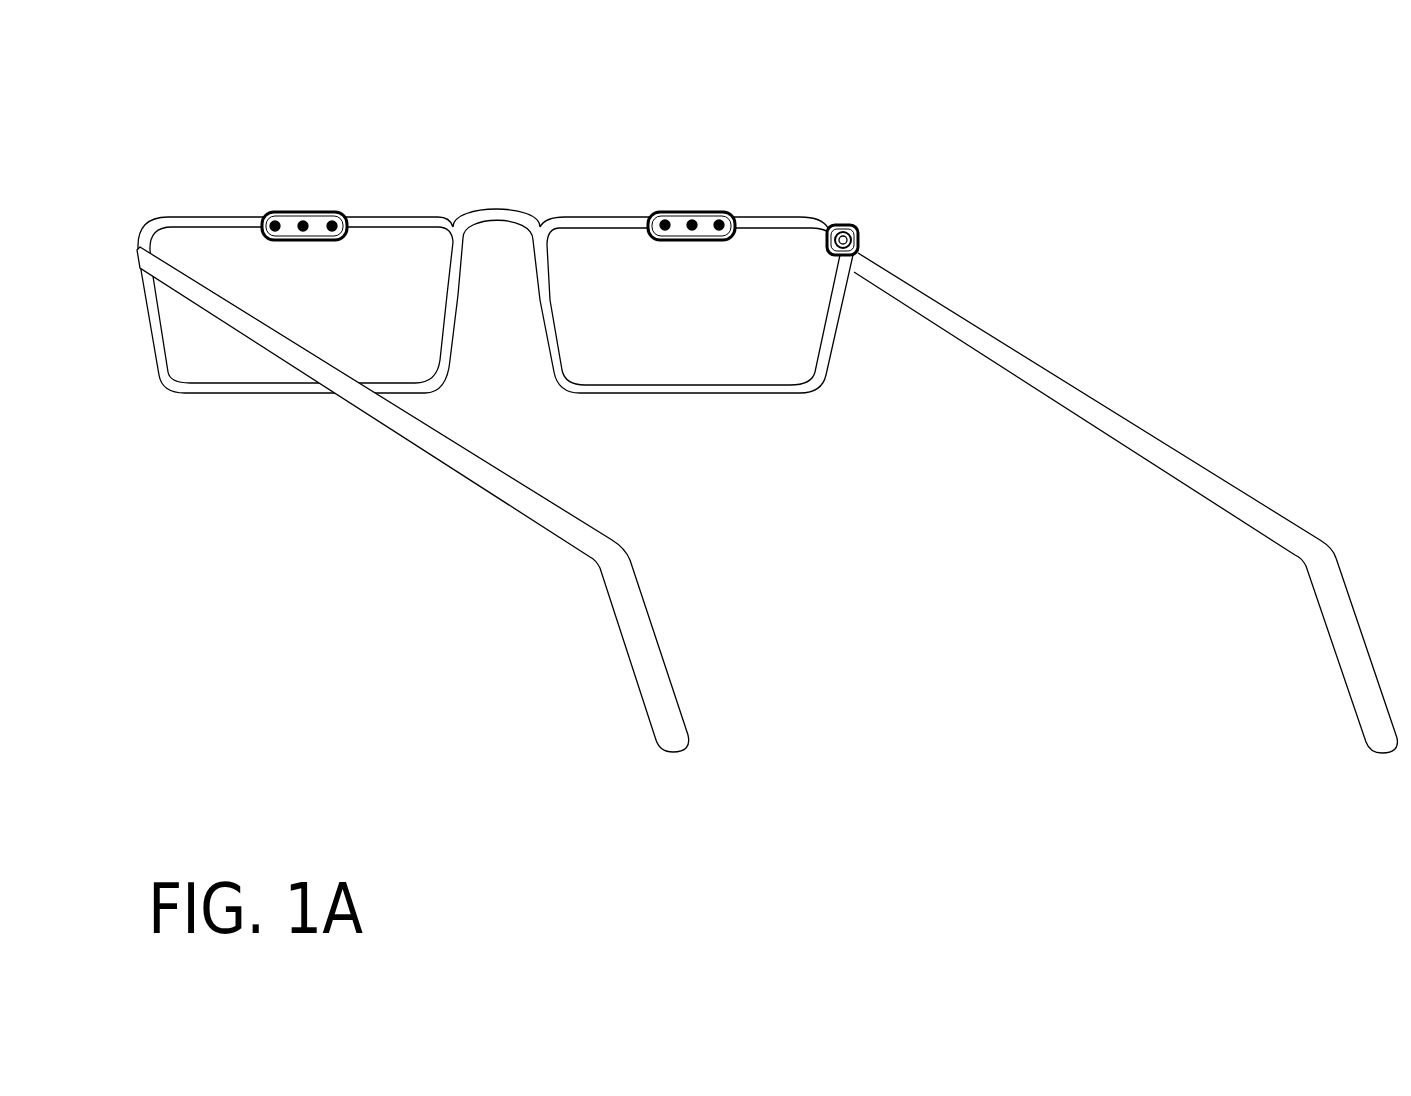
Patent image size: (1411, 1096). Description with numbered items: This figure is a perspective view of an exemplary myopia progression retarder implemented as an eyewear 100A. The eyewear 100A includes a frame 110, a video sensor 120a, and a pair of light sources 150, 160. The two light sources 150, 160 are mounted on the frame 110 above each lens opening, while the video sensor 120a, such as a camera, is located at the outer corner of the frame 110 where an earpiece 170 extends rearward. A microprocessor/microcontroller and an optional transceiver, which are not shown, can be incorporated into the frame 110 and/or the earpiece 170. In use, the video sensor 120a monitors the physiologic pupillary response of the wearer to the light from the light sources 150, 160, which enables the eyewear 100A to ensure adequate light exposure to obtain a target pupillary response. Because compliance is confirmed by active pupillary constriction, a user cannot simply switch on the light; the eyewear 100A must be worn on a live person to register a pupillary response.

The eyewear 100A is at (767, 378).
The frame 110 is at (703, 395).
The video sensor 120a is at (842, 225).
The light source 150 is at (303, 212).
The light source 160 is at (692, 212).
The earpiece 170 is at (1163, 433).